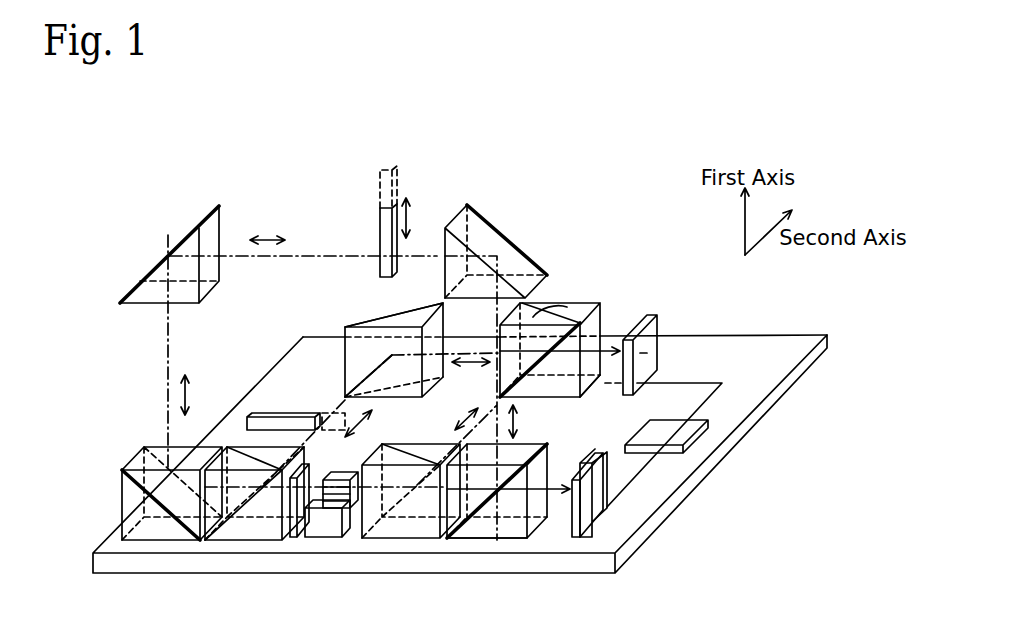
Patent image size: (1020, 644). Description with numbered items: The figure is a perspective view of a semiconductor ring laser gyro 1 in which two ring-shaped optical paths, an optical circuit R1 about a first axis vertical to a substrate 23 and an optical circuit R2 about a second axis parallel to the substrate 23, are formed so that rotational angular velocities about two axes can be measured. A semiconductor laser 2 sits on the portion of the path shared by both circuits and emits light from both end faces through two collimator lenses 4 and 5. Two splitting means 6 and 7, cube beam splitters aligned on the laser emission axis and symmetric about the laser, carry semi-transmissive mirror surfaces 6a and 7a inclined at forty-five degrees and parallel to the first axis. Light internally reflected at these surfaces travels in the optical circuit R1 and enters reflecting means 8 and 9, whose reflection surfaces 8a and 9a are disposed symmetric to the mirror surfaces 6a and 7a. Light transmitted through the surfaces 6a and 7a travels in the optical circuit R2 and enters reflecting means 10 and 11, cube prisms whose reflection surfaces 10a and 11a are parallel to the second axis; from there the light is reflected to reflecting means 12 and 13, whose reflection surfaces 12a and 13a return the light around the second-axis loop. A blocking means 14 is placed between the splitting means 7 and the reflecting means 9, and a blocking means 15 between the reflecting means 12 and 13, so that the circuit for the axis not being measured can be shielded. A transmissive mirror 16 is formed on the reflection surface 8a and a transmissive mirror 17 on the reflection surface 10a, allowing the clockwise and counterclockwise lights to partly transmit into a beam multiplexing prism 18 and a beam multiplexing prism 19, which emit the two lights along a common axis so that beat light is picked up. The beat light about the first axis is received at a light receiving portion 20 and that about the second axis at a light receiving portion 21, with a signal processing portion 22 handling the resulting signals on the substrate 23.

The semiconductor ring laser gyro 1 is at (534, 135).
The semiconductor laser 2 is at (328, 537).
The collimator lens 4 is at (355, 508).
The collimator lens 5 is at (295, 540).
The splitting means 6 is at (406, 548).
The semi-transmissive mirror surface 6a is at (405, 460).
The splitting means 7 is at (229, 550).
The semi-transmissive mirror surface 7a is at (252, 462).
The reflecting means 8 is at (558, 397).
The reflection surface 8a is at (557, 300).
The reflecting means 9 is at (335, 326).
The reflection surface 9a is at (362, 345).
The reflecting means 10 is at (522, 446).
The reflection surface 10a is at (497, 503).
The reflecting means 11 is at (112, 487).
The reflection surface 11a is at (192, 512).
The reflecting means 12 is at (503, 220).
The reflection surface 12a is at (508, 256).
The reflecting means 13 is at (167, 241).
The reflection surface 13a is at (215, 215).
The blocking means 14 is at (258, 420).
The blocking means 15 is at (383, 226).
The transmissive mirror 16 is at (600, 312).
The transmissive mirror 17 is at (533, 458).
The beam multiplexing prism 18 is at (597, 390).
The beam multiplexing prism 19 is at (506, 548).
The light receiving portion 20 is at (647, 353).
The light receiving portion 21 is at (590, 512).
The signal processing portion 22 is at (682, 433).
The substrate 23 is at (767, 367).
The optical circuit R1 is at (328, 409).
The optical circuit R2 is at (168, 362).